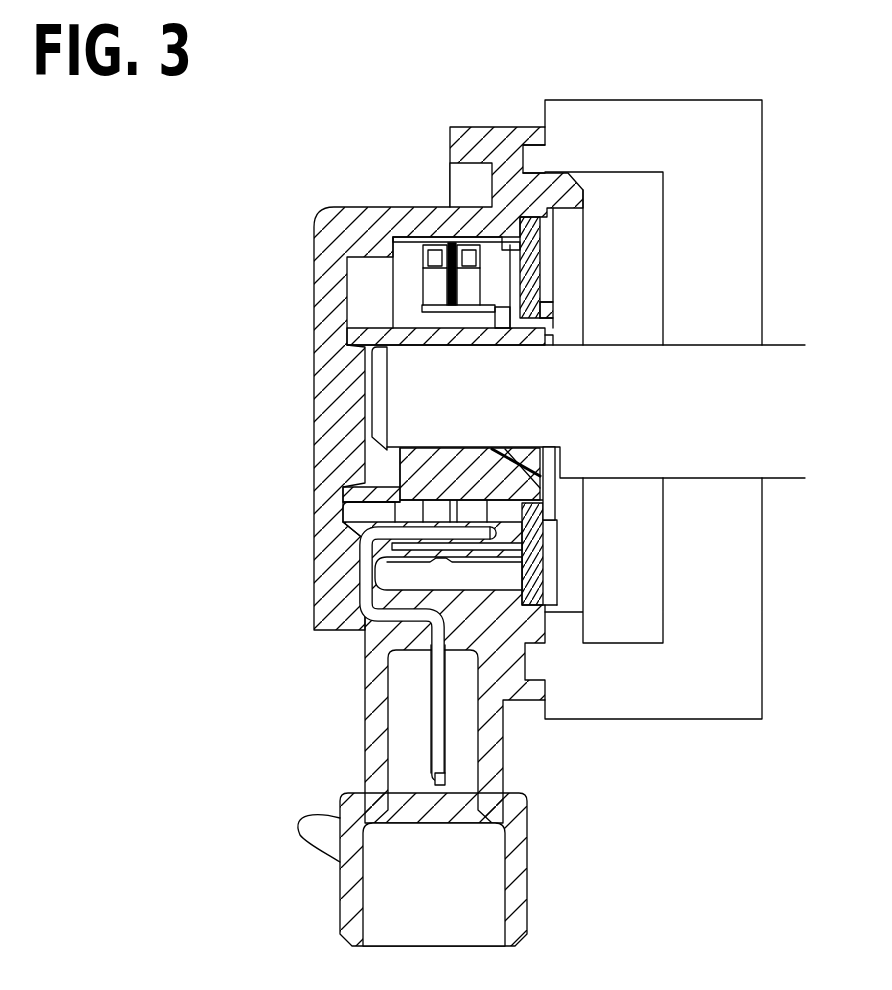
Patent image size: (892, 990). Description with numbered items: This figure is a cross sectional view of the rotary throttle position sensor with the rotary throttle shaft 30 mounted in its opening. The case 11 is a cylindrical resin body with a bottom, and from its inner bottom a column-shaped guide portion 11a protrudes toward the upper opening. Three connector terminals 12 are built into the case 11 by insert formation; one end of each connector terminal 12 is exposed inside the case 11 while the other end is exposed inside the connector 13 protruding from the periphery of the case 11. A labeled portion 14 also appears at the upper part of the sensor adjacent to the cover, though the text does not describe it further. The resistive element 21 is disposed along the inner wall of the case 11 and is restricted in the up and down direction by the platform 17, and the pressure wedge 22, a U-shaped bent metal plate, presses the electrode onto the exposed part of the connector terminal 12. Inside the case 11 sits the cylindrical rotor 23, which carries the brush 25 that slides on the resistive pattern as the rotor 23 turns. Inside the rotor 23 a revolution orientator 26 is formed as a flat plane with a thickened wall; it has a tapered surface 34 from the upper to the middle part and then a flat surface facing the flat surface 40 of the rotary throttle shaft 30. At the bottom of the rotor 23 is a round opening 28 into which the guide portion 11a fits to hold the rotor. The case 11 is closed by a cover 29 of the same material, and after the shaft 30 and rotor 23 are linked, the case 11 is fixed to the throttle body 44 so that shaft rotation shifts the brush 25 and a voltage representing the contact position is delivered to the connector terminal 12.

The case 11 is at (340, 236).
The guide portion 11a is at (360, 398).
The connector terminal 12 is at (443, 732).
The connector 13 is at (527, 860).
The housing body 14 is at (545, 158).
The platform 17 is at (373, 252).
The resistive element 21 is at (428, 248).
The pressure wedge 22 is at (370, 586).
The rotor 23 is at (365, 328).
The brush 25 is at (441, 250).
The revolution orientator 26 is at (407, 457).
The round opening 28 is at (378, 476).
The cover 29 is at (540, 253).
The rotary throttle shaft 30 is at (748, 361).
The tapered surface 34 is at (527, 503).
The flat surface 40 is at (515, 446).
The throttle body 44 is at (745, 137).